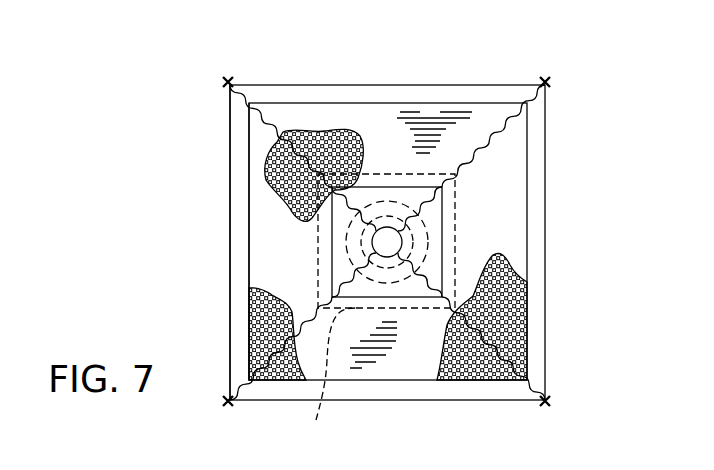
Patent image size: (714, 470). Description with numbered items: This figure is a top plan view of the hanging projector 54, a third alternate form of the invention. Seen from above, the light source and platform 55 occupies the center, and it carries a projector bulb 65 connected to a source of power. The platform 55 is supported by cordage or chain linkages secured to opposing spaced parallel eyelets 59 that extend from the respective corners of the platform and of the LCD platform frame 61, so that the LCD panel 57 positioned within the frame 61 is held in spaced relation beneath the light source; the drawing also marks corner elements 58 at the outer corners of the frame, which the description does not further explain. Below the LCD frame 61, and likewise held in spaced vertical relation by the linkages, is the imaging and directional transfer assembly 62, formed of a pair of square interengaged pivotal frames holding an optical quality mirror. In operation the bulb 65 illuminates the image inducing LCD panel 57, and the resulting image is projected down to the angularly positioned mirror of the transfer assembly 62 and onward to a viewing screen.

The hanging projector 54 is at (467, 52).
The light source and platform 55 is at (427, 222).
The LCD panel 57 is at (262, 244).
The corner fasteners 58 is at (549, 80).
The eyelets 59 is at (548, 88).
The LCD platform frame 61 is at (542, 240).
The imaging and directional transfer assembly 62 is at (312, 424).
The projector bulb 65 is at (348, 253).